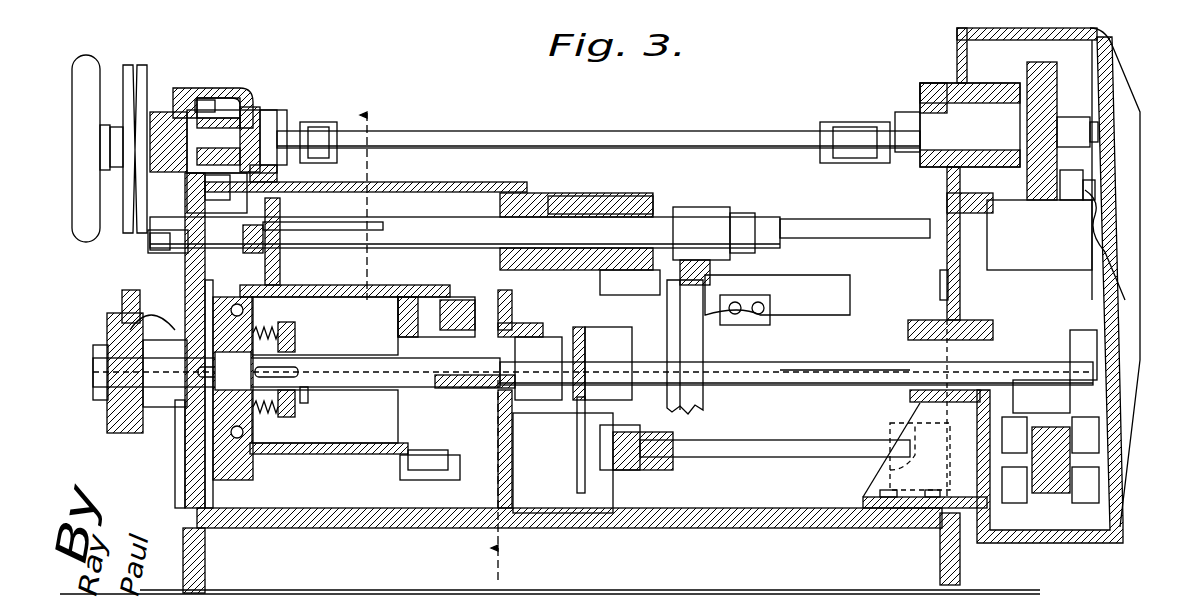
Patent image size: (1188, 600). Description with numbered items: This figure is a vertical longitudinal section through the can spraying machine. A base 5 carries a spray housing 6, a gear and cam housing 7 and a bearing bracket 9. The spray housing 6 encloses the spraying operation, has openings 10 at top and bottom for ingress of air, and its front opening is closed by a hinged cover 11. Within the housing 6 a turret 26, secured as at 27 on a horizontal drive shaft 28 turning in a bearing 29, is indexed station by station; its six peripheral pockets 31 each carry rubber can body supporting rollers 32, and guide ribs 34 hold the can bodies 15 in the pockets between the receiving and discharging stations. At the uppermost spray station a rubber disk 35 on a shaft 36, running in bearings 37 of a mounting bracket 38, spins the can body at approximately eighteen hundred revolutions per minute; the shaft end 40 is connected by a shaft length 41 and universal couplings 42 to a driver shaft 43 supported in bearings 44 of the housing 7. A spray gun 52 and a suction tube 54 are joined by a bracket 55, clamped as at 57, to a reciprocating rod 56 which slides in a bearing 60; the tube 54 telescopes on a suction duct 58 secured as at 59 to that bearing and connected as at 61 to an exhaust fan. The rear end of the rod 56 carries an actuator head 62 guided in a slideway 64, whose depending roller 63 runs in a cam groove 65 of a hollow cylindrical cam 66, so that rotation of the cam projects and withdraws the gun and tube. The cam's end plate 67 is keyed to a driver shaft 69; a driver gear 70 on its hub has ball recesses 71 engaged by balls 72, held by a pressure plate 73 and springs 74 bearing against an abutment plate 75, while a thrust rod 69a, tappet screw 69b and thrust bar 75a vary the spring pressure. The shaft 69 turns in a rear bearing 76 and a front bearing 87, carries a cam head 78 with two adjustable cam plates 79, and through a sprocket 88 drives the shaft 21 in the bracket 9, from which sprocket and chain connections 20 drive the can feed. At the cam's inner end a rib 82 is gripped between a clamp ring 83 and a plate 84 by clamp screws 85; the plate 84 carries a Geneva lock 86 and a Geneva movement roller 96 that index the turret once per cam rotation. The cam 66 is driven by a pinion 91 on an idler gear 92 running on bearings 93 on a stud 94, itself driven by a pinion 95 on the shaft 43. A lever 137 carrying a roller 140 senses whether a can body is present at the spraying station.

The base 5 is at (183, 555).
The spray housing 6 is at (958, 40).
The gear and cam housing 7 is at (293, 528).
The bearing bracket 9 is at (674, 463).
The openings 10 is at (990, 18).
The hinged cover 11 is at (1140, 72).
The can bodies 15 is at (1039, 235).
The sprocket and chain connections 20 is at (940, 283).
The driver shaft 21 is at (745, 432).
The turret 26 is at (1075, 400).
The turret securing point 27 is at (1081, 341).
The horizontal drive shaft 28 is at (870, 362).
The bearing 29 is at (910, 395).
The peripheral pockets 31 is at (1100, 270).
The can body supporting rollers 32 is at (1100, 445).
The guide ribs 34 is at (947, 203).
The rubber disk 35 is at (1040, 62).
The shaft 36 is at (1065, 125).
The bearings 37 is at (990, 100).
The mounting bracket 38 is at (925, 85).
The shaft end 40 is at (905, 125).
The shaft length 41 is at (673, 131).
The universal couplings 42 is at (318, 127).
The driver shaft 43 is at (220, 110).
The bearings 44 is at (165, 112).
The spray gun 52 is at (818, 222).
The suction tube 54 is at (795, 278).
The bracket 55 is at (718, 207).
The reciprocating rod 56 is at (545, 223).
The clamp 57 is at (775, 318).
The suction duct 58 is at (684, 275).
The duct fastening 59 is at (620, 283).
The bearing 60 is at (620, 185).
The exhaust connection 61 is at (672, 398).
The actuator head 62 is at (281, 221).
The depending roller 63 is at (350, 218).
The slideway 64 is at (398, 228).
The cam groove 65 is at (300, 285).
The cylindrical cam 66 is at (325, 369).
The end plate 67 is at (205, 430).
The driver shaft 69 is at (340, 358).
The thrust rod 69a is at (334, 397).
The tappet screw 69b is at (601, 445).
The driver gear 70 is at (150, 440).
The ball recesses 71 is at (215, 420).
The balls 72 is at (185, 500).
The pressure plate 73 is at (275, 412).
The springs 74 is at (275, 318).
The abutment plate 75 is at (296, 328).
The thrust bar 75a is at (296, 410).
The bearing 76 is at (140, 300).
The cam head 78 is at (107, 350).
The cam plates 79 is at (122, 305).
The inwardly extending rib 82 is at (430, 297).
The clamp ring 83 is at (395, 418).
The plate 84 is at (459, 369).
The clamp screws 85 is at (395, 462).
The Geneva lock 86 is at (513, 413).
The bearing 87 is at (530, 340).
The sprocket 88 is at (580, 330).
The pinion 91 is at (217, 193).
The idler gear 92 is at (125, 180).
The bearings 93 is at (285, 185).
The stud 94 is at (150, 243).
The pinion 95 is at (205, 100).
The Geneva movement roller 96 is at (470, 300).
The lever 137 is at (1120, 215).
The roller 140 is at (1079, 174).